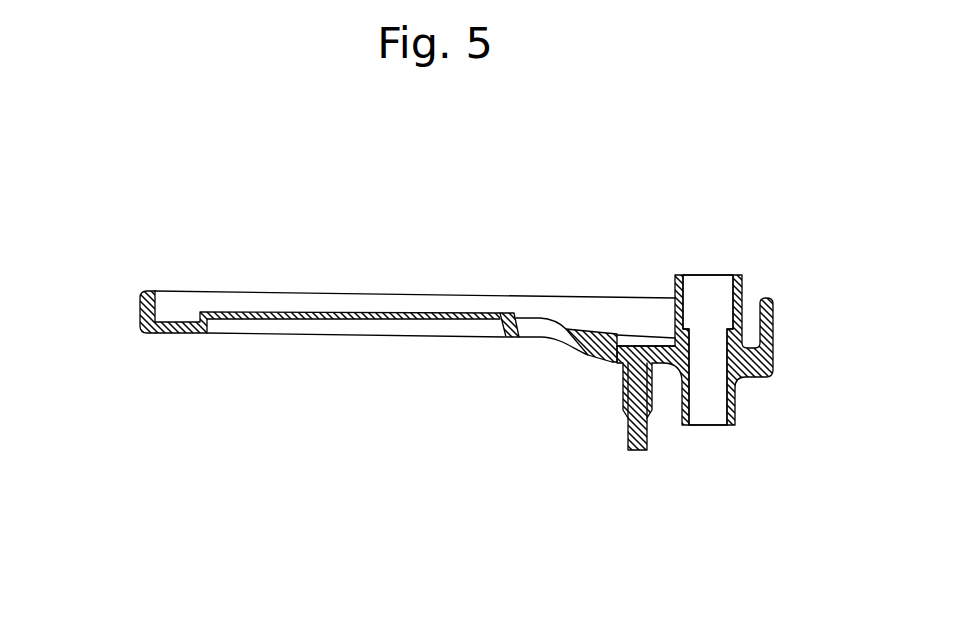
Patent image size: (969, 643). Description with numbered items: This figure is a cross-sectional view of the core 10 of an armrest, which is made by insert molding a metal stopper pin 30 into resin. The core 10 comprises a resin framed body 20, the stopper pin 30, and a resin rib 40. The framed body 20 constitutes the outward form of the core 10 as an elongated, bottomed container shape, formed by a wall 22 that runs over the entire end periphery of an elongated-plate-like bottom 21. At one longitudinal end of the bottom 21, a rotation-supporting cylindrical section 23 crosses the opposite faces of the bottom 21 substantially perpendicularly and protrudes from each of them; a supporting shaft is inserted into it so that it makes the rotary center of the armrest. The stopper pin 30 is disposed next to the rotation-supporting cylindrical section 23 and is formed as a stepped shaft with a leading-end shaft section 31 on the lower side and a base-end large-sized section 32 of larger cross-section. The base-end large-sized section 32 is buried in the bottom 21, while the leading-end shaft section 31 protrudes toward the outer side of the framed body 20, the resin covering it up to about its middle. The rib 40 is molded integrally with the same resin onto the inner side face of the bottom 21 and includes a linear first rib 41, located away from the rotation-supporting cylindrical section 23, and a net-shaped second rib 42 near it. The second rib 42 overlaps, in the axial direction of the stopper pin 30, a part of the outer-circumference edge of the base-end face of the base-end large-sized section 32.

The core 10 is at (757, 280).
The framed body 20 is at (270, 291).
The bottom 21 is at (190, 333).
The wall 22 is at (144, 303).
The rotation-supporting cylindrical section 23 is at (677, 273).
The stopper pin 30 is at (635, 520).
The leading-end shaft section 31 is at (635, 448).
The base-end large-sized section 32 is at (615, 360).
The rib 40 is at (588, 208).
The first rib 41 is at (486, 313).
The second rib 42 is at (590, 332).